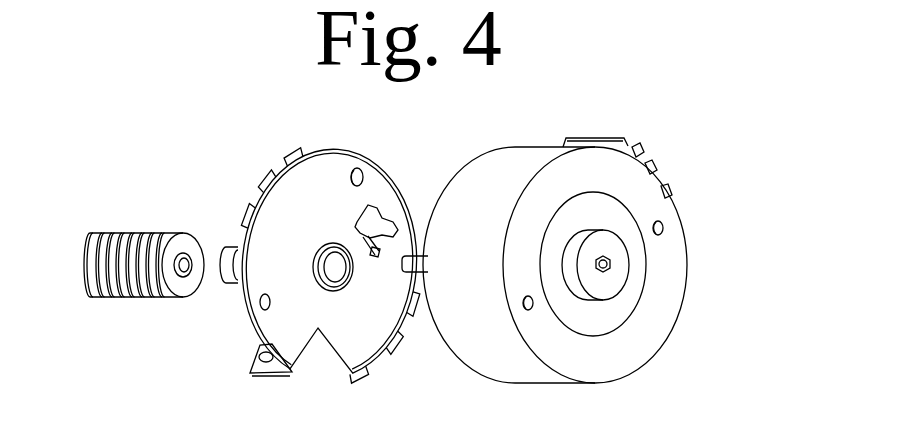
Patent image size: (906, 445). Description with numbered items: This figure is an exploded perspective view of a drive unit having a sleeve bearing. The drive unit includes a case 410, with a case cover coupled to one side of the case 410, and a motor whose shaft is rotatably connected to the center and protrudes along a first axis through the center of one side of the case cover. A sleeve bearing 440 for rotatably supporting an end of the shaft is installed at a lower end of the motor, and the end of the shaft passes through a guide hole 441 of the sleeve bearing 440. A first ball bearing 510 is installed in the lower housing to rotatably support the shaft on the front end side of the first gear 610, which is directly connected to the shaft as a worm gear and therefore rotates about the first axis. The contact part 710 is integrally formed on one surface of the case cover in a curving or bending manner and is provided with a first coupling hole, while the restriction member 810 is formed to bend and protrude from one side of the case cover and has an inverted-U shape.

The case 410 is at (633, 182).
The sleeve bearing 440 is at (622, 263).
The guide hole 441 is at (608, 268).
The first ball bearing 510 is at (228, 243).
The first gear 610 is at (125, 232).
The contact part 710 is at (255, 360).
The restriction member 810 is at (370, 204).